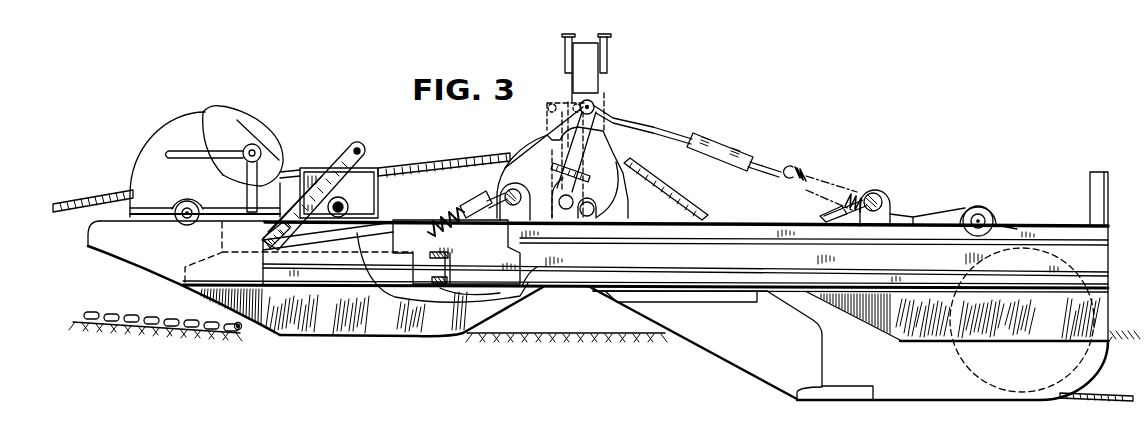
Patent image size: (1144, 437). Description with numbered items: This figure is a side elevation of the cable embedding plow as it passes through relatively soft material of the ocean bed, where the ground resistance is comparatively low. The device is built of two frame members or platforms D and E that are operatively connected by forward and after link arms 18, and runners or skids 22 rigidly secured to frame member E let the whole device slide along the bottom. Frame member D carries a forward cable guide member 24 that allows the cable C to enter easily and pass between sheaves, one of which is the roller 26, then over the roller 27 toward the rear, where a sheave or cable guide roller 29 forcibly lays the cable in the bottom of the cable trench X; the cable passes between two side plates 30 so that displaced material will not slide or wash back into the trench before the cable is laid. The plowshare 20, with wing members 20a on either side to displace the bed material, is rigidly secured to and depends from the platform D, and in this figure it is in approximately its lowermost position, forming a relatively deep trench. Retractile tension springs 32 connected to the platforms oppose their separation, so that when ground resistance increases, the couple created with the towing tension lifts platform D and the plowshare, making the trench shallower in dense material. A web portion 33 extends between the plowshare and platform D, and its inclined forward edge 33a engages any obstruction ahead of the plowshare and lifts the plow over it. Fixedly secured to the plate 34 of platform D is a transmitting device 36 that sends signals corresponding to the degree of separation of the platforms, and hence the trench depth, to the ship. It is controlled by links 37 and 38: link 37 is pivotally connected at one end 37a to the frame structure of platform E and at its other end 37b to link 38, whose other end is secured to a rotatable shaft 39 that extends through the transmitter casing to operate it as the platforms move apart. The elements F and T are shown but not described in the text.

The link arms 18 is at (207, 222).
The plowshare 20 is at (866, 396).
The wing members 20a is at (817, 400).
The runners or skids 22 is at (367, 316).
The forward cable guide member 24 is at (160, 160).
The sheave or roller 26 is at (270, 138).
The roller 27 is at (517, 170).
The sheave or cable guide roller 29 is at (1033, 398).
The side plates 30 is at (928, 386).
The retractile tension springs 32 is at (446, 214).
The web portion 33 is at (752, 362).
The inclined forward edge 33a is at (706, 350).
The plate 34 is at (393, 180).
The transmitting device 36 is at (355, 192).
The link 37 is at (322, 176).
The end of link 37 37a is at (242, 218).
The other end of link 37 37b is at (357, 147).
The link 38 is at (360, 168).
The rotatable shaft 39 is at (352, 206).
The cable C is at (80, 205).
The frame member or platform D is at (465, 253).
The frame member or platform E is at (442, 270).
The frame body F is at (104, 246).
The track chain T is at (143, 312).
The cable trench X is at (1124, 325).